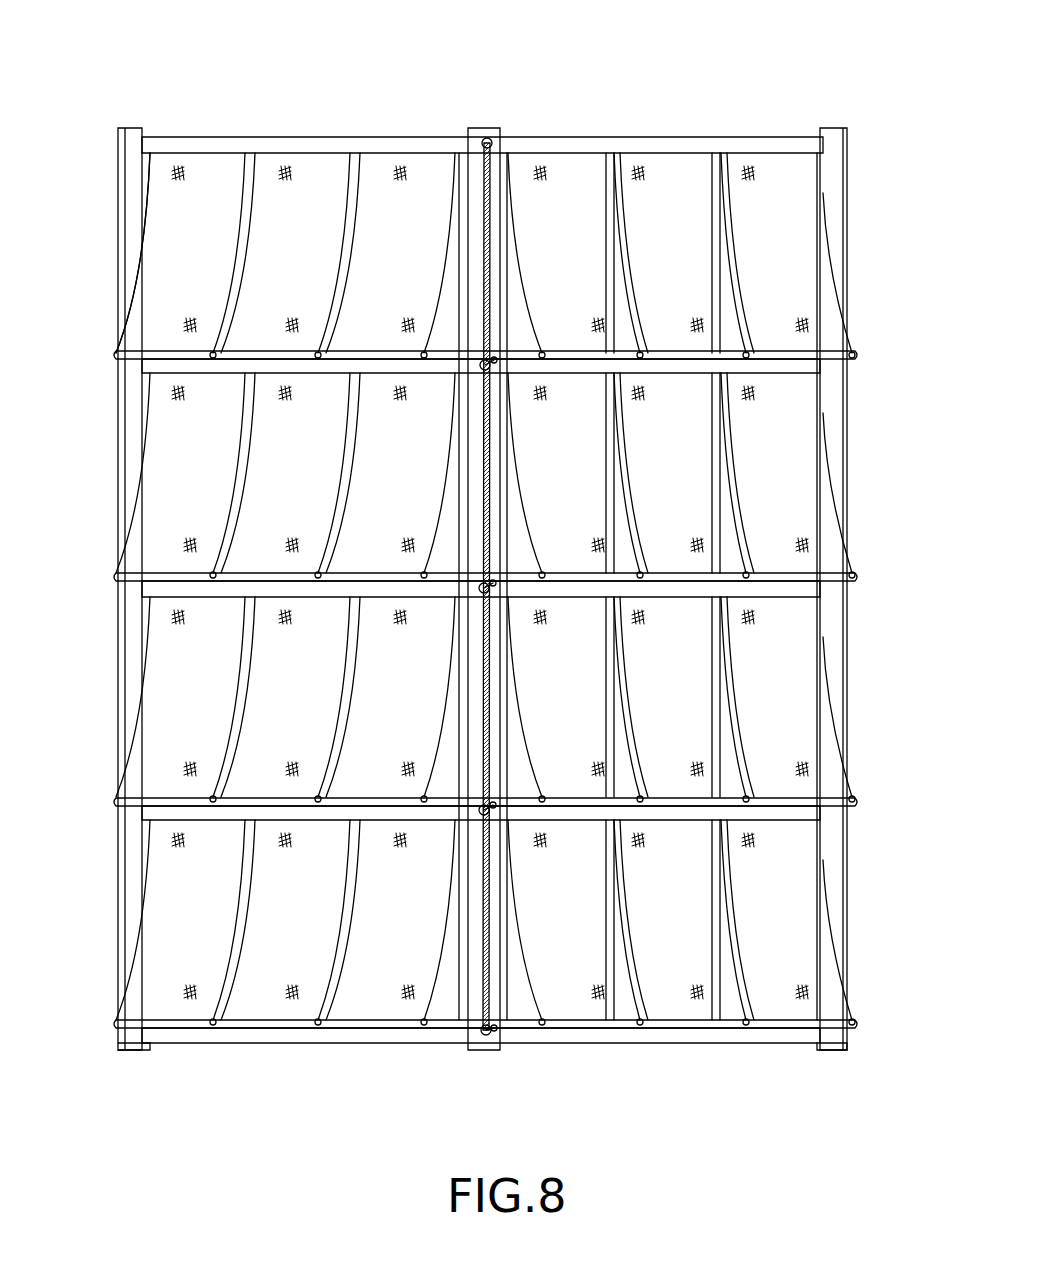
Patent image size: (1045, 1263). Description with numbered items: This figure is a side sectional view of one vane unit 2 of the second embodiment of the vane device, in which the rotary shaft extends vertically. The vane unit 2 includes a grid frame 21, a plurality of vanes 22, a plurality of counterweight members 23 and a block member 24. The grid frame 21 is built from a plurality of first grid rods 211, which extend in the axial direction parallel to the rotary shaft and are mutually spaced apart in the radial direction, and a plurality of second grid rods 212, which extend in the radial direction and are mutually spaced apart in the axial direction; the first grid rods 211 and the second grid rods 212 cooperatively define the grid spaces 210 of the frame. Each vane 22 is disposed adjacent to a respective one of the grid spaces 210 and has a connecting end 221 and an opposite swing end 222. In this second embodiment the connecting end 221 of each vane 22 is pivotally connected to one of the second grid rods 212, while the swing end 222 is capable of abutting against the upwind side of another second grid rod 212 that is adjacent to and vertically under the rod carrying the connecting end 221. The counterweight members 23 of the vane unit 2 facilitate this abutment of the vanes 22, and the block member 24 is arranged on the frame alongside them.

The vane unit 2 is at (814, 70).
The grid frame 21 is at (180, 128).
The vane 22 is at (172, 208).
The counterweight member 23 is at (350, 1023).
The block member 24 is at (835, 1048).
The grid space 210 is at (440, 333).
The first grid rod 211 is at (713, 258).
The second grid rod 212 is at (485, 365).
The connecting end 221 is at (493, 822).
The swing end 222 is at (495, 578).